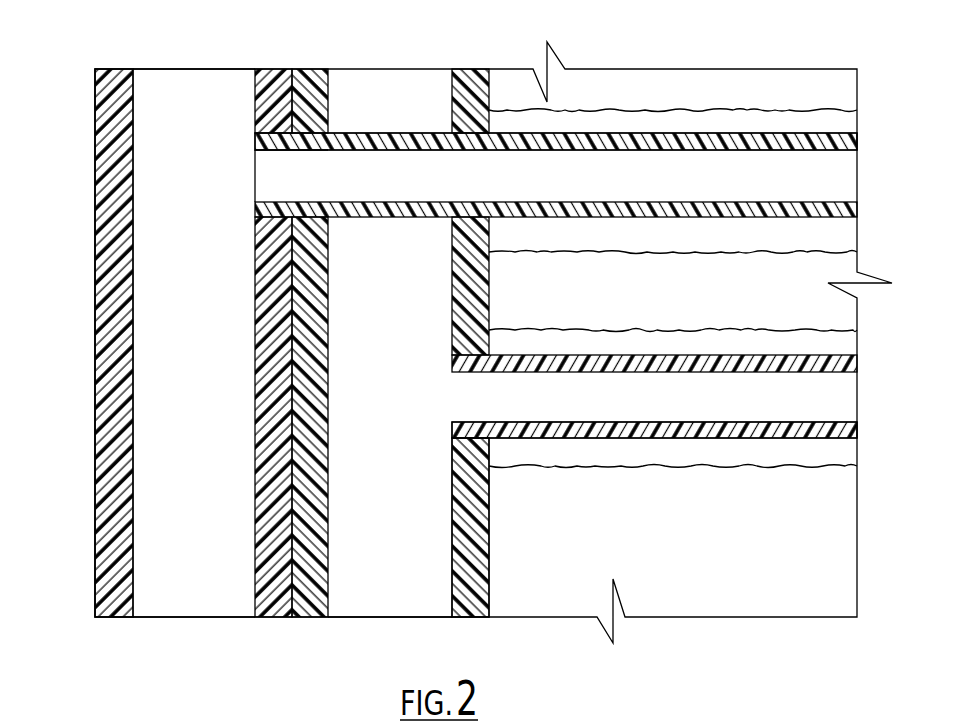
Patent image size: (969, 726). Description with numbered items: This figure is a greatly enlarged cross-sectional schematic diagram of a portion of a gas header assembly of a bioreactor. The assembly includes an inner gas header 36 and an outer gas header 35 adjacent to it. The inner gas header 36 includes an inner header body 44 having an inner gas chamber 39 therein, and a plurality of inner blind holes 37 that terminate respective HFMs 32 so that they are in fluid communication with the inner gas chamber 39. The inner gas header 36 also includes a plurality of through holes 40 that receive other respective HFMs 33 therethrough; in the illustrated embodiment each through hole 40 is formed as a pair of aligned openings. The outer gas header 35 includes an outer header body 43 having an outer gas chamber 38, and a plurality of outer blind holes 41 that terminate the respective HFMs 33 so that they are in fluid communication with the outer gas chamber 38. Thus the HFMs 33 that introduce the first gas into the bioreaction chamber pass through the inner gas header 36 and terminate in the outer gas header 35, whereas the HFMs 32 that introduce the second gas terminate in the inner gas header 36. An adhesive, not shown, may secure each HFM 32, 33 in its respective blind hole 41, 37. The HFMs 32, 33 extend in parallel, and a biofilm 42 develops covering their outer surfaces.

The HFM 32 is at (823, 430).
The HFM 33 is at (723, 138).
The outer gas header 35 is at (95, 197).
The inner gas header 36 is at (490, 562).
The inner blind hole 37 is at (467, 422).
The outer gas chamber 38 is at (178, 498).
The inner gas chamber 39 is at (373, 560).
The through hole 40 is at (463, 147).
The outer blind hole 41 is at (268, 177).
The biofilm 42 is at (597, 228).
The outer header body 43 is at (108, 393).
The inner header body 44 is at (487, 515).